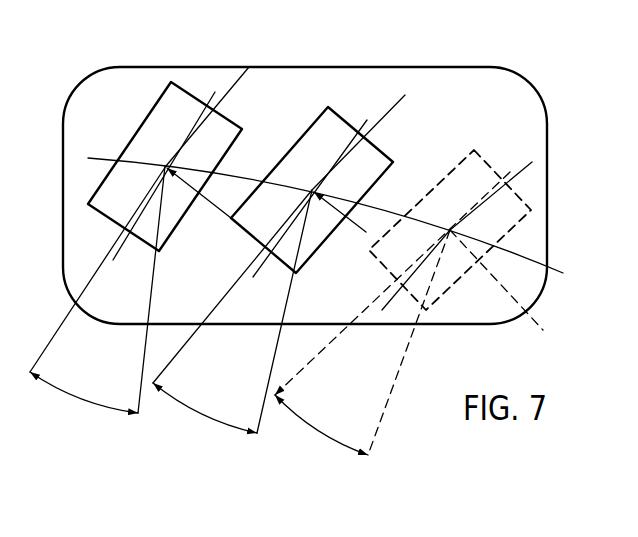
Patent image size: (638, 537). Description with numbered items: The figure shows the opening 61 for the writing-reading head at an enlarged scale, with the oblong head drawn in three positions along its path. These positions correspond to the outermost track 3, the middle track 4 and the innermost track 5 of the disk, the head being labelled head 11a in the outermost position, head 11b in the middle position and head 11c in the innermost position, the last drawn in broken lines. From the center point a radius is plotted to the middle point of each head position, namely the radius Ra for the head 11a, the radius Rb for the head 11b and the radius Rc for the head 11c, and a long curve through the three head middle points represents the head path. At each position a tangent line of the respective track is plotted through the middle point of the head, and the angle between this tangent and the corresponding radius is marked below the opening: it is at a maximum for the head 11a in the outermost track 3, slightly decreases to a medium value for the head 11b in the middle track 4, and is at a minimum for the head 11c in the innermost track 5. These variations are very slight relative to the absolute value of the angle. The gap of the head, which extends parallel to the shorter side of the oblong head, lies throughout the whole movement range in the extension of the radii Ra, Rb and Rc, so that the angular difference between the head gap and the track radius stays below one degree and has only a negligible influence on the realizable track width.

The opening 61 is at (436, 67).
The outermost track 3 is at (249, 66).
The middle track 4 is at (405, 96).
The innermost track 5 is at (522, 172).
The head in the outermost track position 11a is at (151, 108).
The head in the middle track position 11b is at (341, 112).
The head in the innermost track position 11c is at (403, 294).
The radius to the head in the outermost track Ra is at (228, 202).
The radius to the head in the middle track Rb is at (368, 233).
The radius to the head in the innermost track Rc is at (527, 300).